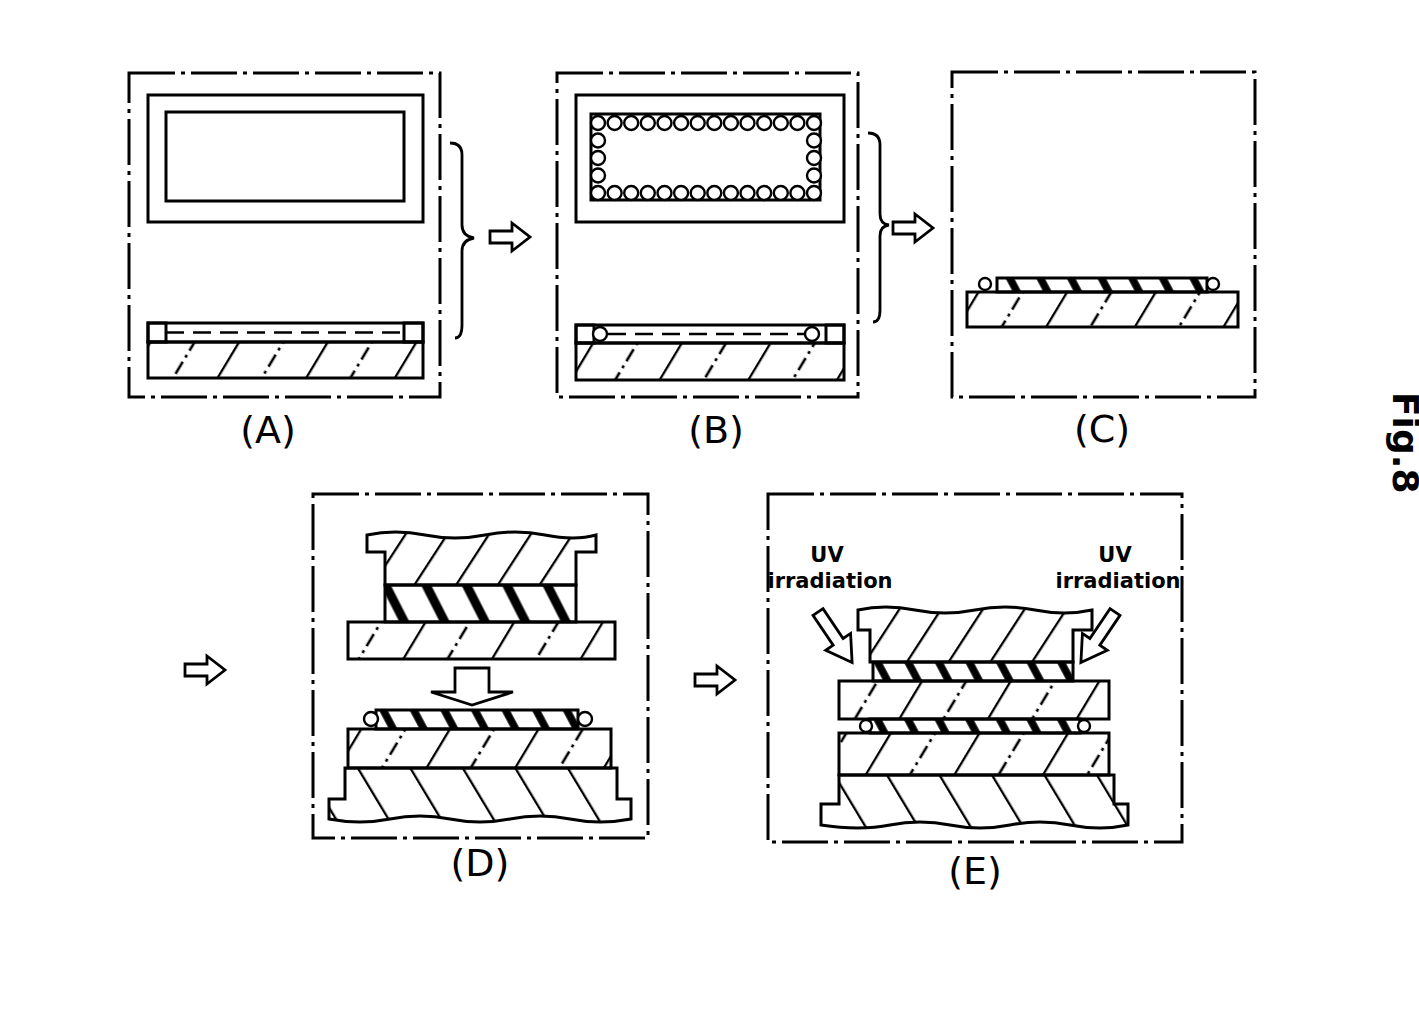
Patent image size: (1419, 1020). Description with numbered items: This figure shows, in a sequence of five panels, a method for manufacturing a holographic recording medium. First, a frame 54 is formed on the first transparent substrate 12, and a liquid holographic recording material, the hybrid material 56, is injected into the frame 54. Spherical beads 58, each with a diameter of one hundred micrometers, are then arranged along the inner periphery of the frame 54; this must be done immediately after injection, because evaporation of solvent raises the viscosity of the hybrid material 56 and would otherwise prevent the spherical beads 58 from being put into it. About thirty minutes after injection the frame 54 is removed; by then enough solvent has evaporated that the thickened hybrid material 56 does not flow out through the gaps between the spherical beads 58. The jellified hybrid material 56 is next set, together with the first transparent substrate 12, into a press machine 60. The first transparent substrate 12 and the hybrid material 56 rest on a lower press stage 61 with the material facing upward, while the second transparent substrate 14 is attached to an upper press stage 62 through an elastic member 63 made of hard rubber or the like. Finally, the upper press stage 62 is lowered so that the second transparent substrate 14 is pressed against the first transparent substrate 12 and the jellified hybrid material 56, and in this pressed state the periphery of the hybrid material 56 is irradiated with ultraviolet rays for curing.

The first transparent substrate 12 is at (173, 366).
The second transparent substrate 14 is at (350, 640).
The frame 54 is at (216, 104).
The hybrid material 56 is at (190, 321).
The spherical beads 58 is at (694, 117).
The press machine 60 is at (622, 613).
The lower press stage 61 is at (360, 787).
The upper press stage 62 is at (404, 562).
The elastic member 63 is at (400, 597).